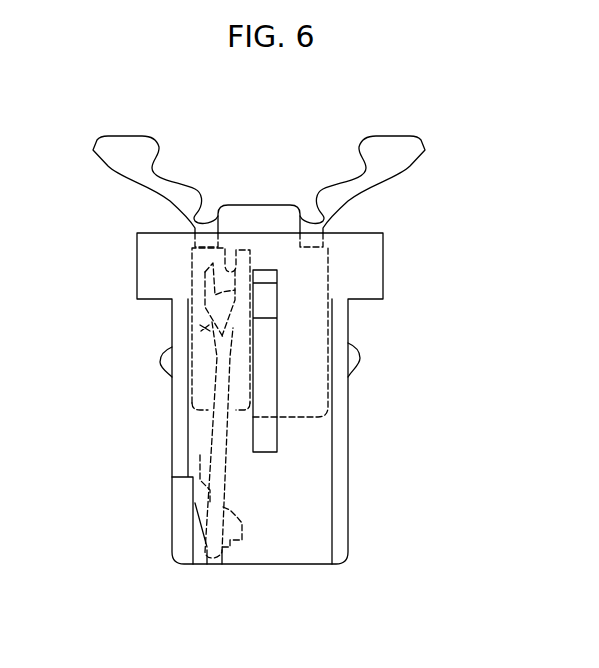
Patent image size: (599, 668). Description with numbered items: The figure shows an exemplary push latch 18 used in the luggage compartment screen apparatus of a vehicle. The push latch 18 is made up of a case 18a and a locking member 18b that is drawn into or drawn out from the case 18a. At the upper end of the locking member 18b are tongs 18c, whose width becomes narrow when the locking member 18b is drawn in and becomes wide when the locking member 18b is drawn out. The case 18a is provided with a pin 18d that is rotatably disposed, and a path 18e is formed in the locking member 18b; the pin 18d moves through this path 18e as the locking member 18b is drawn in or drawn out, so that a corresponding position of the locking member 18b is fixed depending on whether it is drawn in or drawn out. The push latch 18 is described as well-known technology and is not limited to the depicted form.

The push latch 18 is at (211, 140).
The case 18a is at (373, 263).
The locking member 18b is at (267, 210).
The tongs 18c is at (388, 143).
The pin 18d is at (215, 452).
The path 18e is at (205, 328).